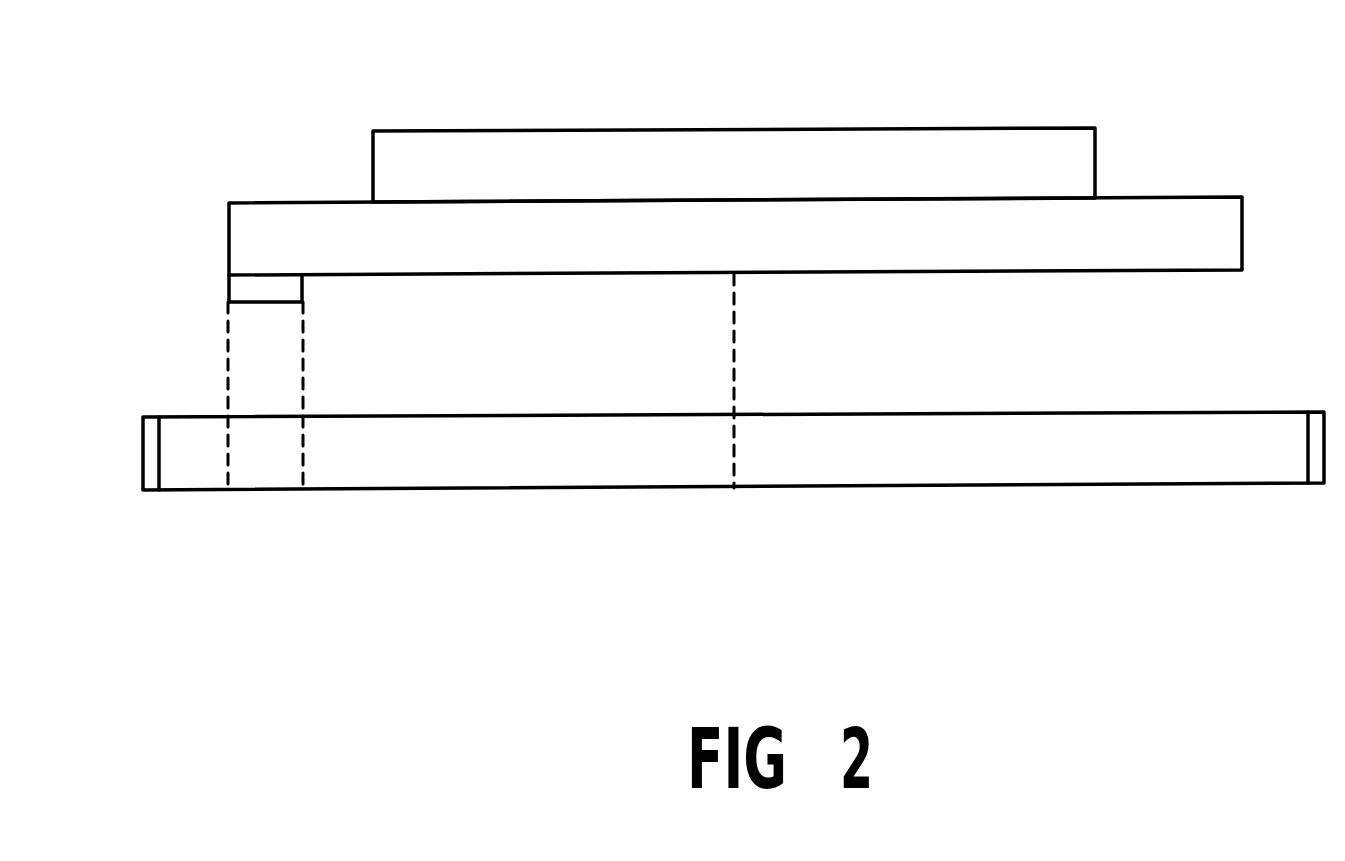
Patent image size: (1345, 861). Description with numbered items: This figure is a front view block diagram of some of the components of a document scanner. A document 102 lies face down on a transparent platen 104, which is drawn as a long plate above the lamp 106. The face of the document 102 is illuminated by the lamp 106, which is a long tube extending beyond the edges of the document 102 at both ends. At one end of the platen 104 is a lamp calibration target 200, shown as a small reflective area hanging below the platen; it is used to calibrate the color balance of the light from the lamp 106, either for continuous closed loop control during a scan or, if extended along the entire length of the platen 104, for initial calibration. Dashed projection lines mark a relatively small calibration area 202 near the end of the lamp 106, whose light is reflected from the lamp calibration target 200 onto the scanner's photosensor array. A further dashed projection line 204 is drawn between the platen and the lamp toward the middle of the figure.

The document 102 is at (667, 130).
The transparent platen 104 is at (1163, 197).
The lamp 106 is at (1142, 485).
The lamp calibration target 200 is at (229, 292).
The calibration area 202 is at (303, 502).
The reference projection line 204 is at (734, 488).